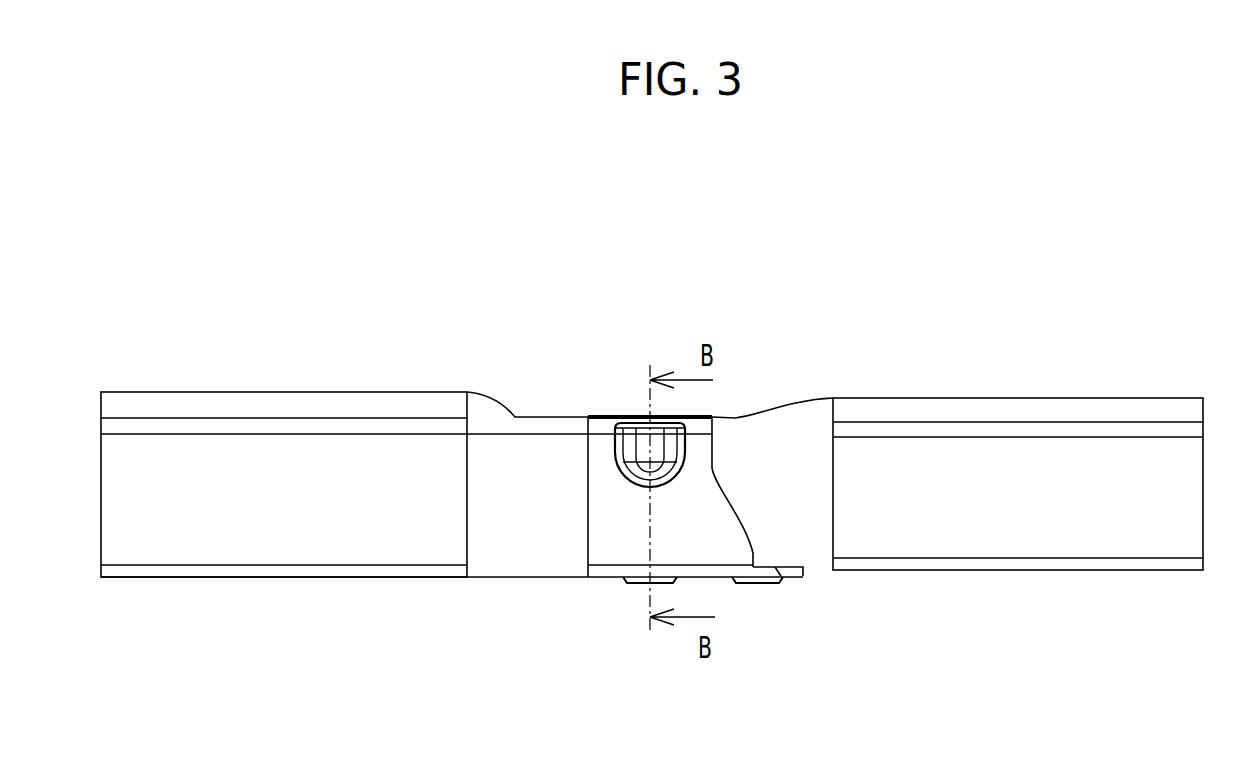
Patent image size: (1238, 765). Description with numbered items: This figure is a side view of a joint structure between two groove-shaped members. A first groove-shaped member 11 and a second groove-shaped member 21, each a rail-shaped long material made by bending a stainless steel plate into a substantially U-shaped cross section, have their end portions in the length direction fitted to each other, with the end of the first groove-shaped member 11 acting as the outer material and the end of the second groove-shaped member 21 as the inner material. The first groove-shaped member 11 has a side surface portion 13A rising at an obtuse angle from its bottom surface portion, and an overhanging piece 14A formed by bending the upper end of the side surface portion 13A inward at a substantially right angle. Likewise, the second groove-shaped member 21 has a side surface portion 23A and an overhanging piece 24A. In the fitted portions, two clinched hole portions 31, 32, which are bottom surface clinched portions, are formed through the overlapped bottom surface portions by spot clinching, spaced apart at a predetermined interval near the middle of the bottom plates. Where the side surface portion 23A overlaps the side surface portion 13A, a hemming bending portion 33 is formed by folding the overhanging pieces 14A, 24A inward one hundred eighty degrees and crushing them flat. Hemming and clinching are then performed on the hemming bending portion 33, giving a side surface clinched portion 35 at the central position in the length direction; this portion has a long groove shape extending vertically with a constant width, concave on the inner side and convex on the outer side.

The first groove-shaped member 11 is at (300, 592).
The side surface portion 13A is at (307, 503).
The overhanging piece 14A is at (288, 405).
The second groove-shaped member 21 is at (1011, 586).
The side surface portion 23A is at (1063, 507).
The overhanging piece 24A is at (1051, 408).
The clinched hole portion 31 is at (623, 586).
The clinched hole portion 32 is at (770, 586).
The hemming bending portion 33 is at (594, 416).
The side surface clinched portion 35 is at (638, 416).